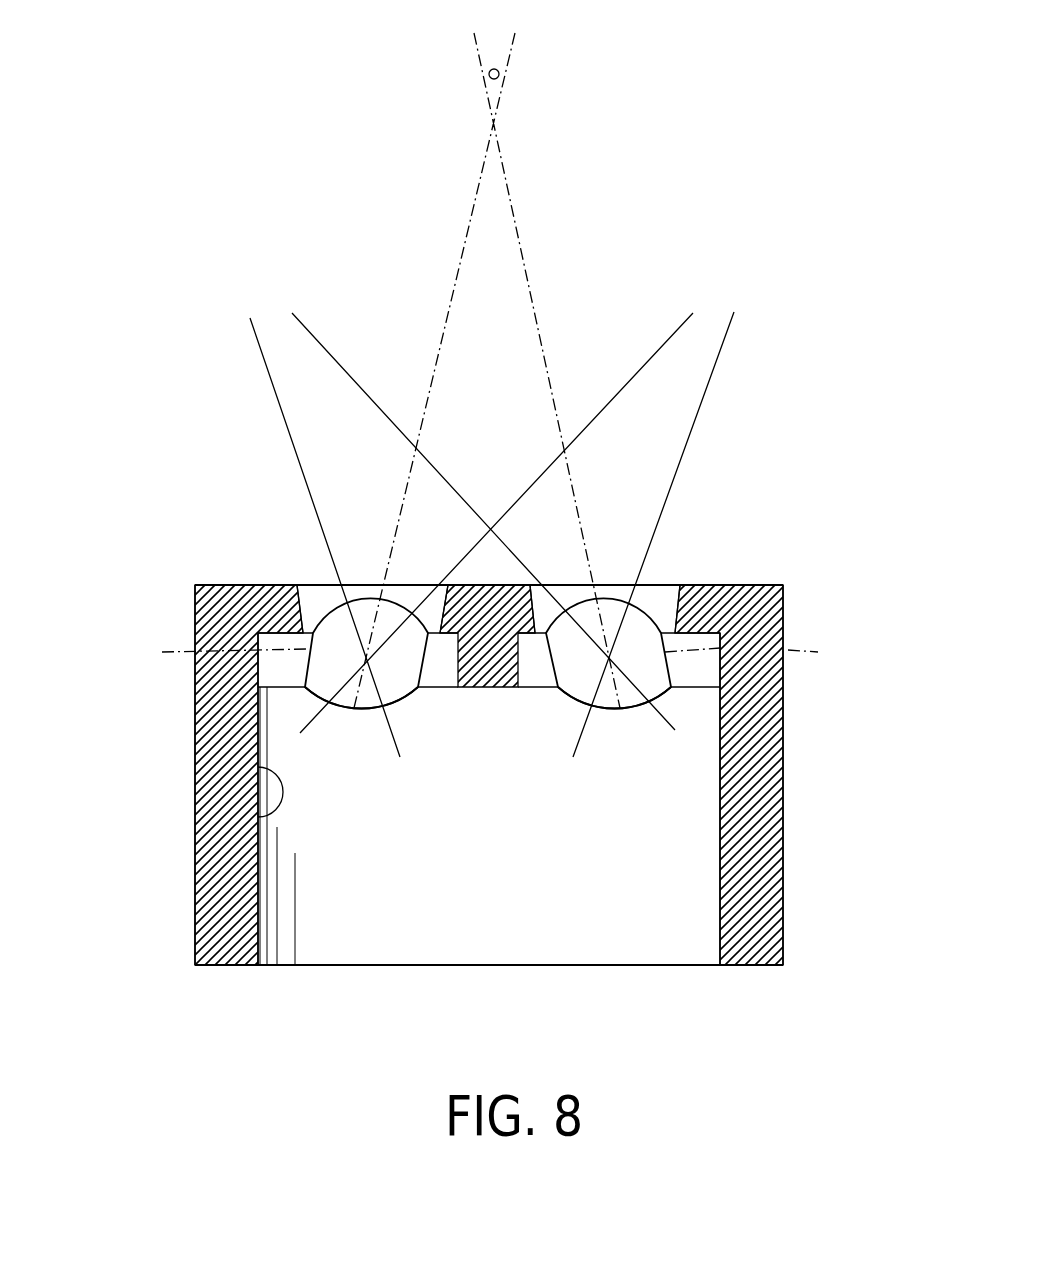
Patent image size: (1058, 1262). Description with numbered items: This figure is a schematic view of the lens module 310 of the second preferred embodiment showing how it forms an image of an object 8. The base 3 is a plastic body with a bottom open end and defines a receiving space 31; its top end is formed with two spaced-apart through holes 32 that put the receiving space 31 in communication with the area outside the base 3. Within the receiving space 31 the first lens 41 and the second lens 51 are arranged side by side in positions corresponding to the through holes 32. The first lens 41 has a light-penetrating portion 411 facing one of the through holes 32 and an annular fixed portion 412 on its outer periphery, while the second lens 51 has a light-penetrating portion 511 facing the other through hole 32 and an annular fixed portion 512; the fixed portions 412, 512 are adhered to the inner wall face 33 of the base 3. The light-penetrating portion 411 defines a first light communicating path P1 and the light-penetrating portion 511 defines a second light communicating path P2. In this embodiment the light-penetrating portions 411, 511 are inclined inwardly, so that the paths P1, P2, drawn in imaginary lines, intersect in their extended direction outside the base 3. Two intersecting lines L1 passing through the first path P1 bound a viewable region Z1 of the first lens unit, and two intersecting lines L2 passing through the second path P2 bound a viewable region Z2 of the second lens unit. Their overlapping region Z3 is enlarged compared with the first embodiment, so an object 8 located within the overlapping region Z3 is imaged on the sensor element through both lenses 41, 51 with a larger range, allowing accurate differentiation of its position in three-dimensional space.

The base 3 is at (210, 578).
The lens module 310 is at (775, 575).
The receiving space 31 is at (413, 917).
The through holes 32 is at (317, 583).
The inner wall face 33 is at (252, 820).
The first lens 41 is at (303, 697).
The light-penetrating portion 411 is at (404, 698).
The fixed portion 412 is at (270, 675).
The second lens 51 is at (683, 698).
The light-penetrating portion 511 is at (572, 695).
The fixed portion 512 is at (705, 673).
The first light communicating path P1 is at (217, 652).
The second light communicating path P2 is at (759, 652).
The intersecting lines L1 is at (457, 515).
The intersecting lines L2 is at (525, 516).
The viewable region Z1 is at (302, 387).
The viewable region Z2 is at (683, 394).
The overlapping region Z3 is at (568, 185).
The object 8 is at (500, 71).